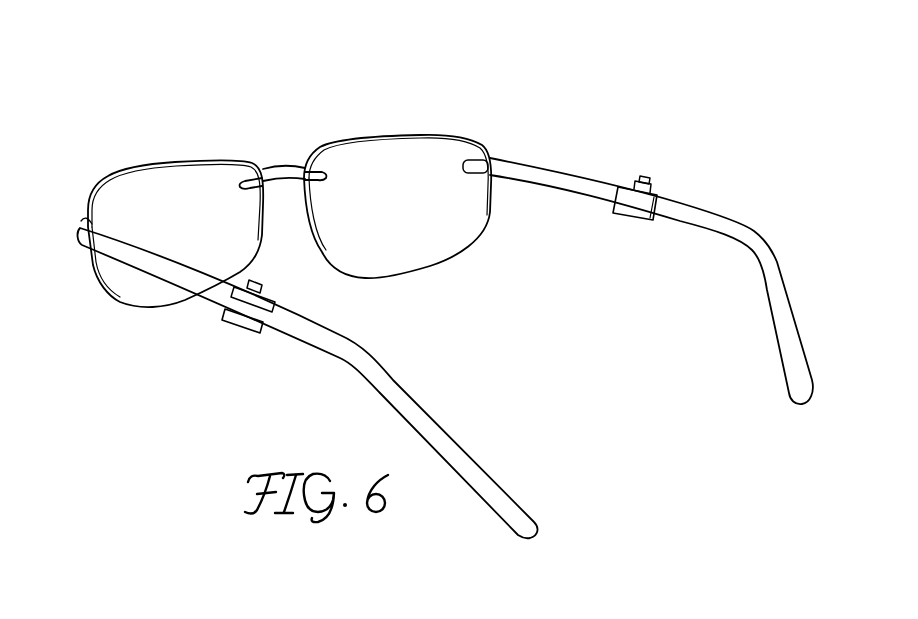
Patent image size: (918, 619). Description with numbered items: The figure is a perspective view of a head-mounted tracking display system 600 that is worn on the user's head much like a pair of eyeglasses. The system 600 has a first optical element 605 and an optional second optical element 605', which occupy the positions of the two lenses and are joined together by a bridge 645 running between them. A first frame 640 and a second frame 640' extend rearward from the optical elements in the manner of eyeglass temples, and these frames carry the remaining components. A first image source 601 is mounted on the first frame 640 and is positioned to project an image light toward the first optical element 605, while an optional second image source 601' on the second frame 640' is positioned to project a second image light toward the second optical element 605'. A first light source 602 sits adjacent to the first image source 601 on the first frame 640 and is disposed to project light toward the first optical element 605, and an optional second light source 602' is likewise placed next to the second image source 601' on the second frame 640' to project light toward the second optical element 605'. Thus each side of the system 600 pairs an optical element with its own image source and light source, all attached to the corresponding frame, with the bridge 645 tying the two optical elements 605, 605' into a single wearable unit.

The head-mounted tracking display system 600 is at (190, 43).
The second optical element 605' is at (172, 205).
The first optical element 605 is at (397, 171).
The bridge 645 is at (282, 167).
The first frame 640 is at (651, 259).
The second frame 640' is at (308, 383).
The first image source 601 is at (623, 234).
The second image source 601' is at (226, 348).
The first light source 602 is at (653, 154).
The second light source 602' is at (296, 296).